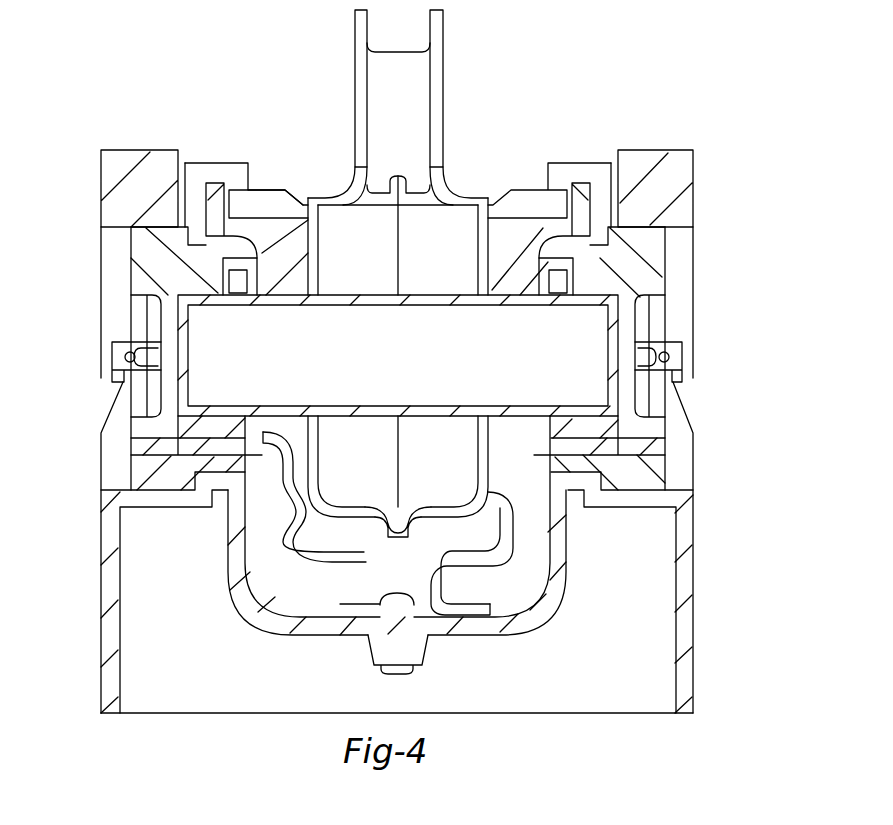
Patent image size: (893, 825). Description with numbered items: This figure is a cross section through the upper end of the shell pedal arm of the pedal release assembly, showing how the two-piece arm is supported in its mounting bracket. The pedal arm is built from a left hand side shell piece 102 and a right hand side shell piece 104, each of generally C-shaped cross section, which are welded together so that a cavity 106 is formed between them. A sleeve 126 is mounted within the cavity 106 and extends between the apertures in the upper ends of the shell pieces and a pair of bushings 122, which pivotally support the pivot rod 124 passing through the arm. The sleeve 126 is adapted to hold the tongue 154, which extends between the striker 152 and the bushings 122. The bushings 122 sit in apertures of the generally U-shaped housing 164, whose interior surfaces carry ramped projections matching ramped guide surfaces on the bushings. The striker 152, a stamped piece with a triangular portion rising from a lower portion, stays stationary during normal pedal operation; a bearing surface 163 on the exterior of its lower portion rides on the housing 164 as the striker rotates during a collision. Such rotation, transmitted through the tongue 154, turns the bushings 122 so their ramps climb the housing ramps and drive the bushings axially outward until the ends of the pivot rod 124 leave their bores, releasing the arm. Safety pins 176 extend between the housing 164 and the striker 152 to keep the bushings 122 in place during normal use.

The left hand side shell piece 102 is at (330, 206).
The right hand side shell piece 104 is at (454, 204).
The cavity 106 is at (371, 257).
The bushings 122 is at (160, 258).
The pivot rod 124 is at (393, 300).
The sleeve 126 is at (267, 230).
The striker 152 is at (443, 77).
The tongue 154 is at (504, 551).
The bearing surface 163 is at (518, 626).
The housing 164 is at (692, 638).
The safety pins 176 is at (115, 356).